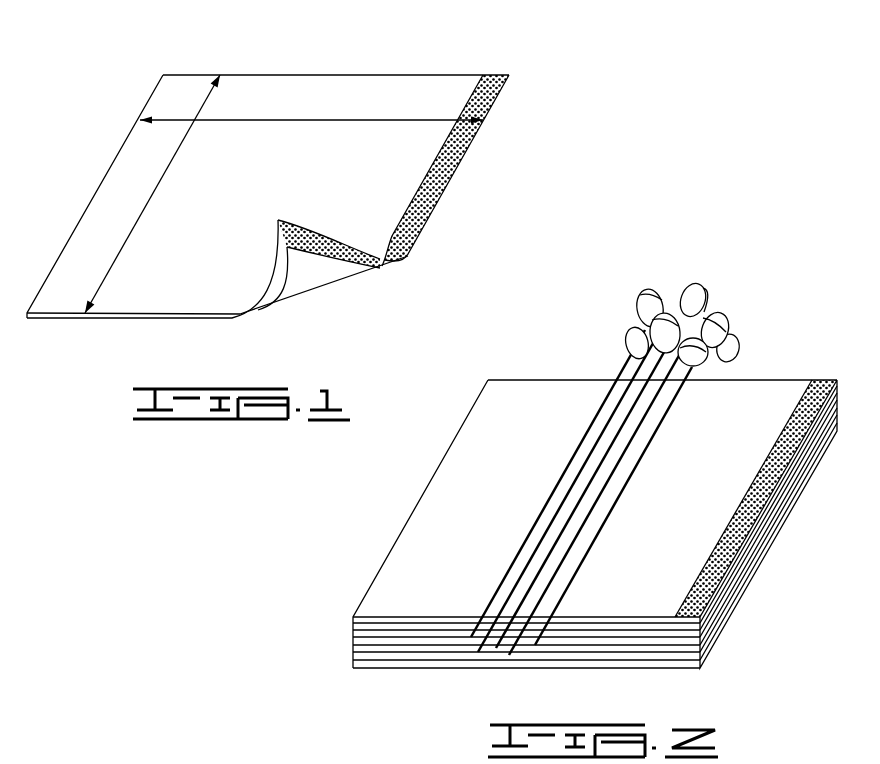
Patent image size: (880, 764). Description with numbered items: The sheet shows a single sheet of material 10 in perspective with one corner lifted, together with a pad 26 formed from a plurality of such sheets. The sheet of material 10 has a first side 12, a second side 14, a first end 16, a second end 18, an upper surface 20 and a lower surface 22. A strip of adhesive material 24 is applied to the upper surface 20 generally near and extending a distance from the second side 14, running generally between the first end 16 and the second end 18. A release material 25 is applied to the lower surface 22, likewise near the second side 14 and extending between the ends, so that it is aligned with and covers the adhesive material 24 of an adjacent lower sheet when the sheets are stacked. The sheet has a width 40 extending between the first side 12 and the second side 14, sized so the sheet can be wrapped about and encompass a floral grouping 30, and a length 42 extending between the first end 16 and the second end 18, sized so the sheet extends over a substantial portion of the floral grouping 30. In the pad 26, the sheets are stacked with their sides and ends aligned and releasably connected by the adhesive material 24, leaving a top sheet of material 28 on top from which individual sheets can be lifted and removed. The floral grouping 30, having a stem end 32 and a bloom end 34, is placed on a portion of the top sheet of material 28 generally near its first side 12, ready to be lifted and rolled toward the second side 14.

In FIG. 1, the sheet of material 10 is at (479, 37).
In FIG. 2, the sheet of material 10 is at (346, 641).
In FIG. 1, the first side 12 is at (104, 181).
In FIG. 2, the first side 12 is at (424, 494).
In FIG. 1, the second side 14 is at (456, 174).
In FIG. 2, the second side 14 is at (775, 493).
In FIG. 1, the first end 16 is at (288, 74).
In FIG. 2, the first end 16 is at (549, 379).
In FIG. 1, the second end 18 is at (106, 318).
In FIG. 2, the second end 18 is at (403, 624).
In FIG. 1, the upper surface 20 is at (242, 168).
In FIG. 1, the lower surface 22 is at (312, 280).
In FIG. 1, the adhesive material 24 is at (426, 200).
In FIG. 2, the adhesive material 24 is at (805, 418).
In FIG. 1, the release material 25 is at (330, 244).
In FIG. 2, the pad 26 is at (804, 315).
In FIG. 2, the top sheet of material 28 is at (411, 565).
In FIG. 2, the floral grouping 30 is at (606, 453).
In FIG. 2, the stem end 32 is at (611, 519).
In FIG. 2, the bloom end 34 is at (705, 300).
In FIG. 1, the width 40 is at (297, 118).
In FIG. 1, the length 42 is at (158, 180).